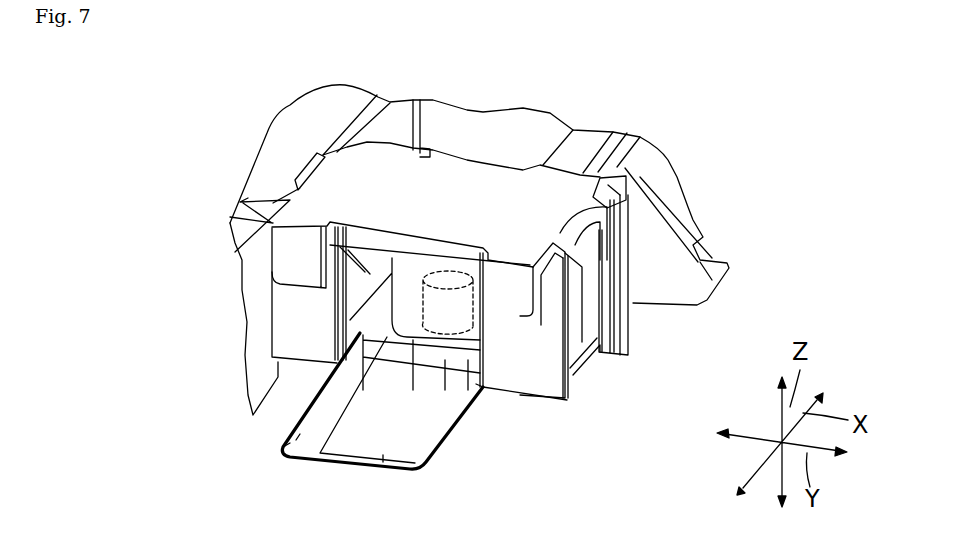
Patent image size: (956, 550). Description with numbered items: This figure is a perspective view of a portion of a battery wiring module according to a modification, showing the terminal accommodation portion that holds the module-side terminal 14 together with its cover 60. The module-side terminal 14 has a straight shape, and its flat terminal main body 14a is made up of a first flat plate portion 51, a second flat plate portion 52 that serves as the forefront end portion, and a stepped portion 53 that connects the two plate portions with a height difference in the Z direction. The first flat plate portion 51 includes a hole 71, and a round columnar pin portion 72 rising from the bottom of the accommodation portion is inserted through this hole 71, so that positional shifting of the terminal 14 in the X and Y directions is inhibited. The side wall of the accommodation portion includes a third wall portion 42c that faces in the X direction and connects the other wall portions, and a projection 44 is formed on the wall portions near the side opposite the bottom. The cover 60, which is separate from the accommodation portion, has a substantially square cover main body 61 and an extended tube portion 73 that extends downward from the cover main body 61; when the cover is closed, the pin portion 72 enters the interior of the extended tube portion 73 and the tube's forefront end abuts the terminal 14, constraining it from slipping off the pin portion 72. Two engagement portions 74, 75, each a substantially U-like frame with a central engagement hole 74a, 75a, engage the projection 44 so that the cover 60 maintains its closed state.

The module-side terminal 14 is at (343, 453).
The terminal main body 14a is at (290, 443).
The third wall portion 42c is at (327, 318).
The projection 44 is at (635, 305).
The first flat plate portion 51 is at (296, 440).
The second flat plate portion 52 is at (383, 455).
The stepped portion 53 is at (447, 390).
The cover 60 is at (463, 177).
The cover main body 61 is at (395, 160).
The hole 71 is at (470, 390).
The pin portion 72 is at (477, 293).
The extended tube portion 73 is at (413, 390).
The engagement portion 74 is at (248, 198).
The engagement hole 74a is at (295, 180).
The engagement portion 75 is at (609, 352).
The engagement hole 75a is at (620, 250).